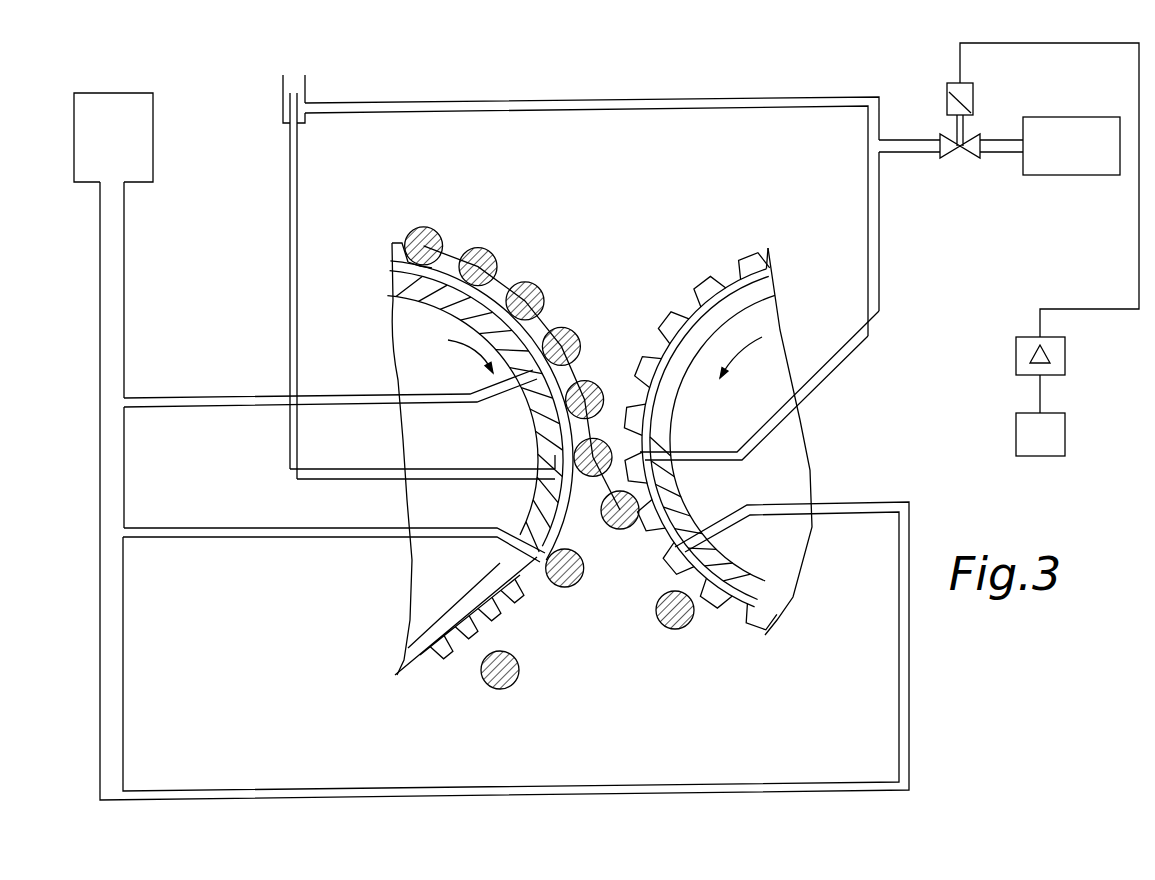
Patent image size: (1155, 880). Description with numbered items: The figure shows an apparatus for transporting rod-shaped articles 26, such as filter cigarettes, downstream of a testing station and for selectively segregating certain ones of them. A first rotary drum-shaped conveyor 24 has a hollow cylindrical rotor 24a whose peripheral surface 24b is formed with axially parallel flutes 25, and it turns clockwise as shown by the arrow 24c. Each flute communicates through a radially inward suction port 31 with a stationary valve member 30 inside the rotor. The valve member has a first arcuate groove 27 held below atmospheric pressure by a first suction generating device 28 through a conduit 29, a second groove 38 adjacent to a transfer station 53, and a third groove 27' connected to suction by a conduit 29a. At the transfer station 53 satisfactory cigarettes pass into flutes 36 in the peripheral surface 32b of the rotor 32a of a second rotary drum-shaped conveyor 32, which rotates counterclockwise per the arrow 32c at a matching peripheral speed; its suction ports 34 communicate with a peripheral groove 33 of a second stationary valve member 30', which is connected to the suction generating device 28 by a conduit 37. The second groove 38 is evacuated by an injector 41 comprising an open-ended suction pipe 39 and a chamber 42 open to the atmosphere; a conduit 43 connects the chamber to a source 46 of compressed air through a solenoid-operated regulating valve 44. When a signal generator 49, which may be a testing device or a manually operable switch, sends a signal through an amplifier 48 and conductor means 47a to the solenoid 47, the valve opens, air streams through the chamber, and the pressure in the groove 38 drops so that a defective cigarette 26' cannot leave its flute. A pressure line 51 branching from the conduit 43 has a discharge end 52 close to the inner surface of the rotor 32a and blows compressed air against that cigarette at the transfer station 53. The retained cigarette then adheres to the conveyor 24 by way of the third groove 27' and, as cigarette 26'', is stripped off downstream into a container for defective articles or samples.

The first rotary drum-shaped conveyor 24 is at (400, 230).
The hollow cylindrical rotor 24a is at (447, 272).
The peripheral surface 24b is at (450, 665).
The arrow 24c is at (456, 363).
The article-receiving flutes 25 is at (522, 610).
The rod-shaped articles 26 is at (504, 323).
The defective cigarette 26' is at (539, 457).
The released defective cigarette 26'' is at (501, 689).
The first arcuate groove 27 is at (512, 351).
The third groove 27' is at (528, 546).
The first suction generating device 28 is at (153, 156).
The conduit 29 is at (226, 396).
The conduit 29a is at (190, 540).
The stationary valve member 30 is at (462, 415).
The stationary valve member 30' is at (722, 438).
The suction port 31 is at (462, 302).
The second rotary drum-shaped conveyor 32 is at (770, 247).
The cylindrical rotor 32a is at (725, 290).
The peripheral surface 32b is at (740, 663).
The arrow 32c is at (747, 364).
The peripheral groove 33 is at (683, 502).
The suction ports 34 is at (723, 562).
The flutes 36 is at (655, 572).
The conduit 37 is at (576, 790).
The second groove 38 is at (545, 478).
The suction pipe 39 is at (290, 302).
The injector 41 is at (320, 95).
The chamber 42 is at (283, 105).
The conduit 43 is at (700, 103).
The solenoid-operated regulating valve 44 is at (968, 152).
The source of compressed air 46 is at (1048, 170).
The solenoid 47 is at (975, 95).
The conductor means 47a is at (1083, 45).
The amplifier 48 is at (1065, 345).
The signal generator 49 is at (1065, 437).
The pressure line 51 is at (817, 368).
The discharge end 52 is at (617, 450).
The transfer station 53 is at (600, 494).